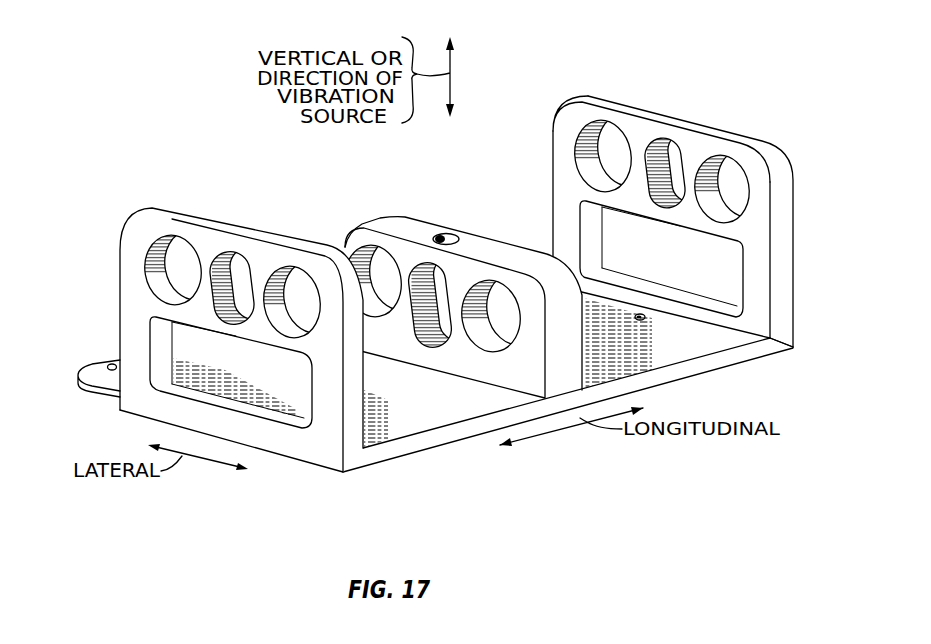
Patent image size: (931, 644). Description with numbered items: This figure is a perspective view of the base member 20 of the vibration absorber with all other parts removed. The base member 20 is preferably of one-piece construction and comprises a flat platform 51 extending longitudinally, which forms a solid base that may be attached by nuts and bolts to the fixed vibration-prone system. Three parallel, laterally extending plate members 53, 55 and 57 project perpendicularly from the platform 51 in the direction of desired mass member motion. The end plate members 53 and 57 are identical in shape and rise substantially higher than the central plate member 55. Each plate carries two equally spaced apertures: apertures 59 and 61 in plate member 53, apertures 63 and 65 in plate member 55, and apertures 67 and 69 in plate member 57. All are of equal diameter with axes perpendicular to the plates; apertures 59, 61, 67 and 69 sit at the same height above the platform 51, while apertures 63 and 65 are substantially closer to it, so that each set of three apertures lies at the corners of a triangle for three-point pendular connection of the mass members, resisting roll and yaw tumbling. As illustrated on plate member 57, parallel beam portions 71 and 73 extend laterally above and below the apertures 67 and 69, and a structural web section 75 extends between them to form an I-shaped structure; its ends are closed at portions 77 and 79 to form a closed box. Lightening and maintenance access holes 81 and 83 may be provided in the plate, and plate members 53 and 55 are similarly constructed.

The base member 20 is at (452, 265).
The flat platform 51 is at (707, 343).
The end plate member 53 is at (220, 321).
The central plate member 55 is at (460, 290).
The end plate member 57 is at (664, 203).
The aperture 59 is at (167, 292).
The aperture 61 is at (293, 330).
The aperture 63 is at (387, 309).
The aperture 65 is at (497, 343).
The aperture 67 is at (609, 156).
The aperture 69 is at (726, 218).
The beam portion 71 is at (670, 128).
The beam portion 73 is at (662, 193).
The structural web section 75 is at (578, 192).
The closed end portion 77 is at (560, 149).
The closed end portion 79 is at (764, 210).
The lightening and maintenance access hole 81 is at (660, 198).
The lightening and maintenance access hole 83 is at (587, 228).